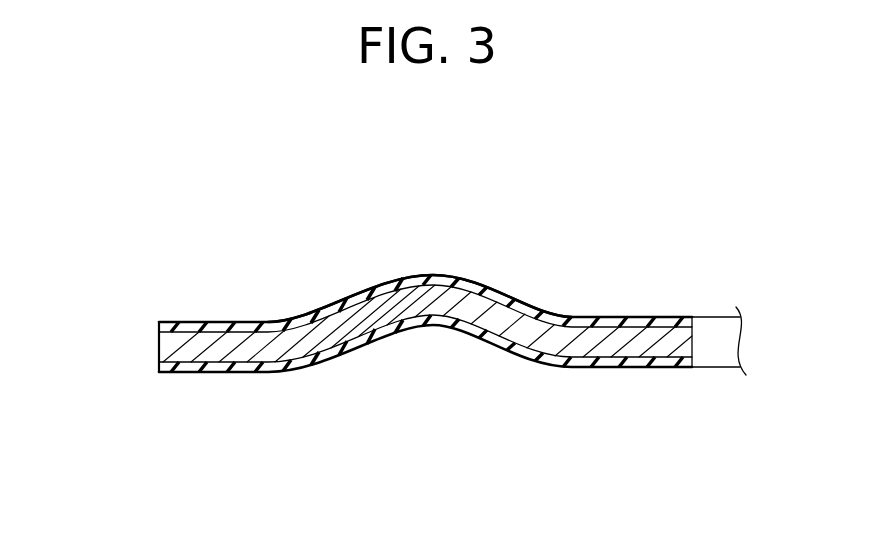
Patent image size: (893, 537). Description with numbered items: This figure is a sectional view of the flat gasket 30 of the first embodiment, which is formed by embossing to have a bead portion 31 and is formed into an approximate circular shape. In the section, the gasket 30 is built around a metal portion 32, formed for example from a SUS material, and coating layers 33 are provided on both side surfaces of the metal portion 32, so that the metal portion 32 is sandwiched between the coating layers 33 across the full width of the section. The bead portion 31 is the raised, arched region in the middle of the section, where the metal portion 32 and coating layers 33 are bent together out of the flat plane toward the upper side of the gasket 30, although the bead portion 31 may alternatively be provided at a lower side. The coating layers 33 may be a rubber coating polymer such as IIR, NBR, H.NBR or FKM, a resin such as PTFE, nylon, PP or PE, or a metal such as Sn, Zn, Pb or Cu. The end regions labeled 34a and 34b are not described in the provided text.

The gasket 30 is at (337, 250).
The bead portion 31 is at (432, 273).
The metal portion 32 is at (655, 352).
The coating layer 33 is at (583, 322).
The uncoated end portion 34a is at (700, 342).
The end portion 34b is at (158, 350).